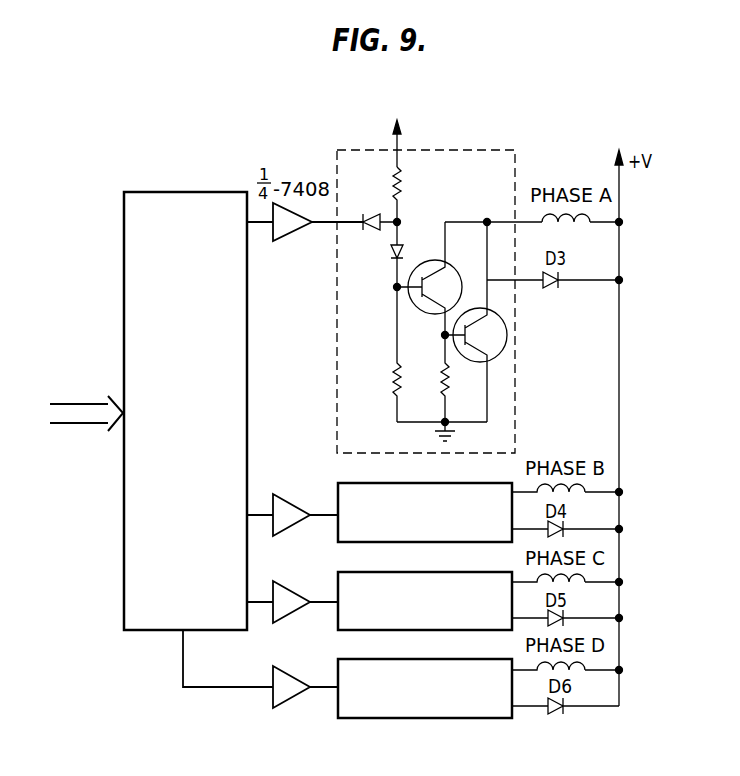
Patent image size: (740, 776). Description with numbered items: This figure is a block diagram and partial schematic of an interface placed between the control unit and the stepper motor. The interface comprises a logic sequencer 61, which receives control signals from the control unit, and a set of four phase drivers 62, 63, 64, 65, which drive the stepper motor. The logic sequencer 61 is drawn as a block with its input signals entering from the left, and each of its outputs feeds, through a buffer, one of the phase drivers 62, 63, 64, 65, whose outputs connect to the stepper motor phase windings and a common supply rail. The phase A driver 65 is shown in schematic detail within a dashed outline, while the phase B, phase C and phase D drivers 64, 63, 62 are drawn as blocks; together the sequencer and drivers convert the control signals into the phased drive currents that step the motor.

The logic sequencer 61 is at (148, 192).
The phase driver 62 is at (338, 682).
The phase driver 63 is at (338, 592).
The phase driver 64 is at (338, 500).
The phase driver 65 is at (516, 418).